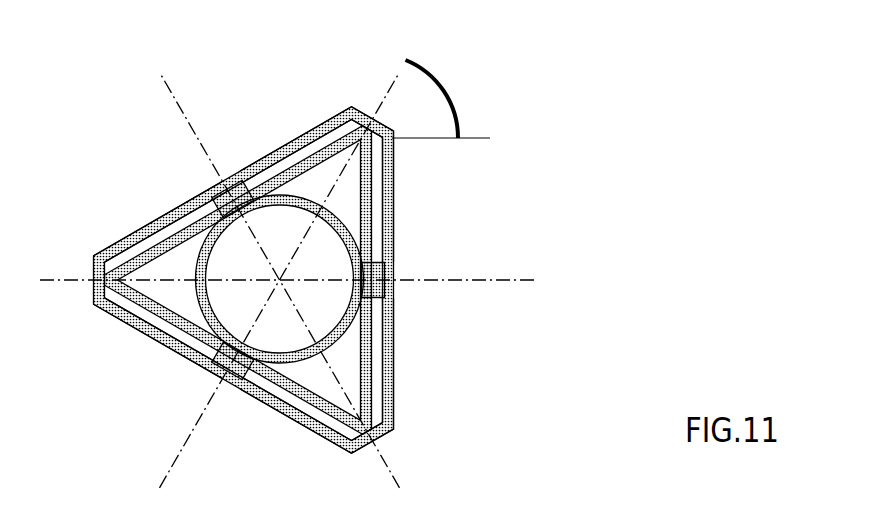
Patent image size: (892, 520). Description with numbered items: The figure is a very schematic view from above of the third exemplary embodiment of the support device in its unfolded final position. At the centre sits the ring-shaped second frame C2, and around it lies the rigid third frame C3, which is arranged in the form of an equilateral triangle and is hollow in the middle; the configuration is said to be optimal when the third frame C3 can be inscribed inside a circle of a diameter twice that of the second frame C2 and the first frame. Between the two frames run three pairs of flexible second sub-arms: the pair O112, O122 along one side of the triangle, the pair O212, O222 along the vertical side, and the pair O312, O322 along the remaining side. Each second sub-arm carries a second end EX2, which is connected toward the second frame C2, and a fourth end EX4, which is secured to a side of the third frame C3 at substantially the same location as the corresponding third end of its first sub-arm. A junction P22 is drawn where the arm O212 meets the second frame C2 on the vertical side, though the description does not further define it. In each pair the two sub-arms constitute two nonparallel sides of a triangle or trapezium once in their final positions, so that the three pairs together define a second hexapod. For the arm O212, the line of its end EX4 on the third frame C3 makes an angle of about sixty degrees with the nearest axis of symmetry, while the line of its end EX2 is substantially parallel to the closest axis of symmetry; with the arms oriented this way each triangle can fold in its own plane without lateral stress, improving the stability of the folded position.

The third frame C3 is at (142, 225).
The second frame C2 is at (203, 315).
The connecting pad P22 is at (390, 288).
The second sub-arm O112 is at (180, 218).
The second sub-arm O122 is at (285, 150).
The second sub-arm O212 is at (390, 232).
The second sub-arm O222 is at (382, 375).
The second sub-arm O312 is at (277, 390).
The second sub-arm O322 is at (183, 333).
The second end EX2 is at (397, 262).
The fourth end EX4 is at (399, 146).